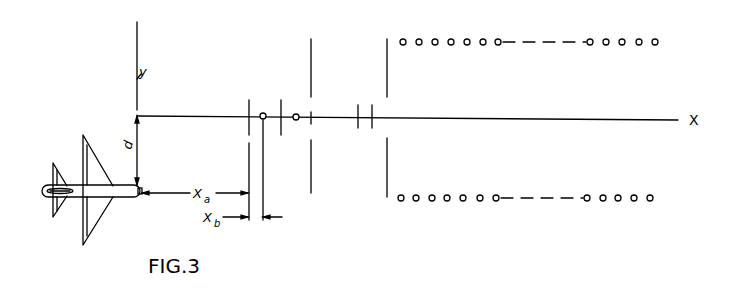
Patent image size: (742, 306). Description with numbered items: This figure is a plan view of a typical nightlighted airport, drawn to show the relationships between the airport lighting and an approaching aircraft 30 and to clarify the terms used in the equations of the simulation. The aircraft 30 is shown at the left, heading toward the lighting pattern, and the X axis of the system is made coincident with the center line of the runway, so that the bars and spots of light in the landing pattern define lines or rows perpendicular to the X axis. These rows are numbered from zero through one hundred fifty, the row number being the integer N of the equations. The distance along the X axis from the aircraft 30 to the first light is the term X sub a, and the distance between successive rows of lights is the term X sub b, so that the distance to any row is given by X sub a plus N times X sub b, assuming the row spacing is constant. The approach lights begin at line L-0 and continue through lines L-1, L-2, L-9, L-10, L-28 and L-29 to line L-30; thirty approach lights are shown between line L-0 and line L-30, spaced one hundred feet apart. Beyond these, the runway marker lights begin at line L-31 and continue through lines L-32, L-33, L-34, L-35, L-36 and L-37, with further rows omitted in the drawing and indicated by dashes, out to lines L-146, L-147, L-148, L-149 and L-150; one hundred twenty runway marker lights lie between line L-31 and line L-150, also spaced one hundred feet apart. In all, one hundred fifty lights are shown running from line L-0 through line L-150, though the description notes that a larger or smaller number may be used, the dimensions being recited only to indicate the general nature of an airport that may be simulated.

The aircraft 30 is at (99, 210).
The line L-0 is at (249, 232).
The line L-1 is at (263, 232).
The line L-2 is at (281, 222).
The line L-9 is at (311, 205).
The line L-10 is at (323, 205).
The line L-28 is at (354, 205).
The line L-29 is at (369, 205).
The line L-30 is at (387, 205).
The line L-31 is at (401, 203).
The line L-32 is at (416, 203).
The line L-33 is at (432, 203).
The line L-34 is at (447, 203).
The line L-35 is at (463, 203).
The line L-36 is at (480, 203).
The line L-37 is at (496, 203).
The line L-146 is at (587, 203).
The line L-147 is at (603, 203).
The line L-148 is at (618, 203).
The line L-149 is at (634, 203).
The line L-150 is at (650, 203).